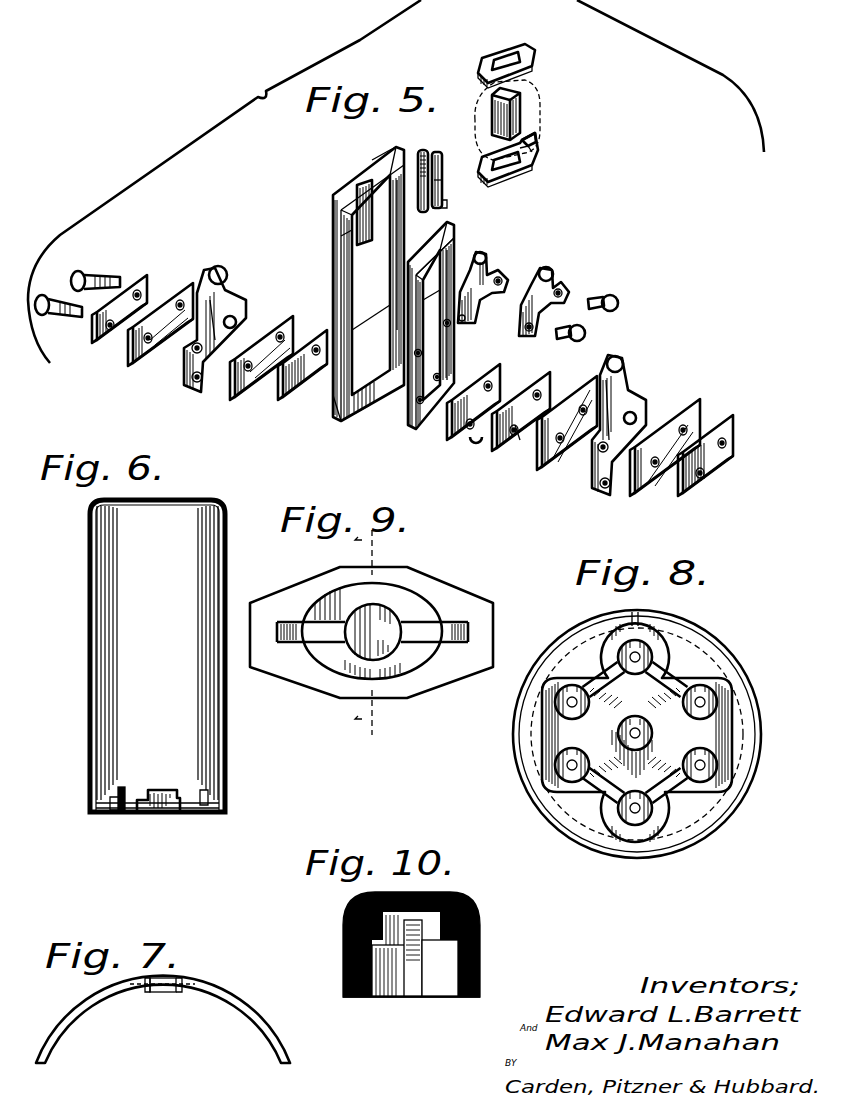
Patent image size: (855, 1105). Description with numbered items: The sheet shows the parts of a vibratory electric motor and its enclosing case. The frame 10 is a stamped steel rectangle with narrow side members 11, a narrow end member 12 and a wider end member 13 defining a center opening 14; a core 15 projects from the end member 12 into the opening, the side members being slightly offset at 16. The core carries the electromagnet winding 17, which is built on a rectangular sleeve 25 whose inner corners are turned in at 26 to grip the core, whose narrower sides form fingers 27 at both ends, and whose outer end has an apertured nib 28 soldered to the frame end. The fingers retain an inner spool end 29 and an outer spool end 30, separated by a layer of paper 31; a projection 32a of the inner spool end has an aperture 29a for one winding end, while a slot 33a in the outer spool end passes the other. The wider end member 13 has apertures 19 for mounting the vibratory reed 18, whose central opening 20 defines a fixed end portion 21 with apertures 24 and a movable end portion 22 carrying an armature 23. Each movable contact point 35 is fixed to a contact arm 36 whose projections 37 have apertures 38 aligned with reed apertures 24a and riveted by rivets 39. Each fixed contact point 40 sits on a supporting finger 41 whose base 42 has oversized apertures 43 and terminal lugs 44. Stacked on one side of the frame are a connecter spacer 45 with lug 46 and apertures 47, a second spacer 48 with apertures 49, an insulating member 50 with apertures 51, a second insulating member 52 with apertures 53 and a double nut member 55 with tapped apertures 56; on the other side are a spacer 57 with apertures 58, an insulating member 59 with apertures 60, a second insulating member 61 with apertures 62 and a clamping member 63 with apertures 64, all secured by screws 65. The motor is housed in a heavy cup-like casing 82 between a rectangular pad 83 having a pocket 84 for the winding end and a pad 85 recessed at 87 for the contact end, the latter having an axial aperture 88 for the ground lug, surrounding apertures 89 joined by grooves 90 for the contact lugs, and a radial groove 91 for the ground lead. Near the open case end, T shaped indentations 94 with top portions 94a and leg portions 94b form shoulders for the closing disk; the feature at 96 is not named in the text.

In FIG. 5, the frame 10 is at (358, 170).
In FIG. 9, the frame 10 is at (355, 540).
In FIG. 5, the side members 11 is at (335, 275).
In FIG. 5, the end member 12 is at (372, 160).
In FIG. 5, the end member 13 is at (362, 405).
In FIG. 5, the center opening 14 is at (362, 302).
In FIG. 5, the core 15 is at (370, 235).
In FIG. 5, the offset 16 is at (345, 236).
In FIG. 5, the electromagnet winding 17 is at (540, 95).
In FIG. 5, the vibratory reed 18 is at (455, 345).
In FIG. 5, the apertures 19 is at (340, 418).
In FIG. 5, the central opening 20 is at (440, 305).
In FIG. 5, the fixed end portion 21 is at (416, 422).
In FIG. 5, the end portion 22 is at (440, 222).
In FIG. 5, the armature 23 is at (445, 240).
In FIG. 5, the apertures 24 is at (437, 384).
In FIG. 5, the apertures 24a is at (452, 322).
In FIG. 5, the sleeve 25 is at (438, 185).
In FIG. 5, the turned-in corners 26 is at (440, 208).
In FIG. 5, the fingers 27 is at (440, 152).
In FIG. 5, the nib 28 is at (422, 150).
In FIG. 5, the inner spool end 29 is at (538, 158).
In FIG. 5, the aperture 29a is at (530, 135).
In FIG. 5, the outer spool end 30 is at (530, 50).
In FIG. 5, the layer of paper 31 is at (520, 90).
In FIG. 5, the projection 32a is at (535, 145).
In FIG. 5, the slot 33a is at (498, 60).
In FIG. 5, the movable contact point 35 is at (482, 252).
In FIG. 5, the movable contact arm 36 is at (482, 290).
In FIG. 5, the projections 37 is at (502, 278).
In FIG. 5, the apertures 38 is at (503, 282).
In FIG. 5, the rivets 39 is at (605, 313).
In FIG. 5, the fixed contact point 40 is at (225, 272).
In FIG. 5, the supporting finger 41 is at (225, 290).
In FIG. 5, the base 42 is at (238, 318).
In FIG. 5, the apertures 43 is at (238, 330).
In FIG. 5, the terminal lugs 44 is at (198, 385).
In FIG. 5, the connecter spacer 45 is at (458, 430).
In FIG. 5, the lug 46 is at (475, 440).
In FIG. 5, the securing apertures 47 is at (490, 383).
In FIG. 5, the second spacer 48 is at (540, 388).
In FIG. 5, the securing apertures 49 is at (522, 432).
In FIG. 5, the insulating member 50 is at (548, 450).
In FIG. 5, the apertures 51 is at (580, 448).
In FIG. 5, the insulating member 52 is at (652, 478).
In FIG. 5, the apertures 53 is at (668, 468).
In FIG. 5, the double nut member 55 is at (700, 482).
In FIG. 5, the tapped apertures 56 is at (722, 452).
In FIG. 5, the spacer 57 is at (292, 400).
In FIG. 5, the apertures 58 is at (312, 360).
In FIG. 5, the insulating member 59 is at (242, 398).
In FIG. 5, the apertures 60 is at (252, 370).
In FIG. 5, the insulating member 61 is at (185, 285).
In FIG. 5, the apertures 62 is at (150, 345).
In FIG. 5, the clamping member 63 is at (138, 280).
In FIG. 5, the apertures 64 is at (150, 290).
In FIG. 5, the screws 65 is at (70, 296).
In FIG. 6, the enclosing casing 82 is at (90, 680).
In FIG. 8, the enclosing casing 82 is at (720, 700).
In FIG. 7, the enclosing casing 82 is at (243, 1005).
In FIG. 9, the pad 83 is at (302, 688).
In FIG. 10, the pad 83 is at (470, 906).
In FIG. 9, the pocket 84 is at (428, 662).
In FIG. 10, the pocket 84 is at (480, 945).
In FIG. 8, the pad 85 is at (745, 742).
In FIG. 8, the recess 87 is at (733, 719).
In FIG. 8, the aperture 88 is at (625, 718).
In FIG. 8, the apertures 89 is at (650, 650).
In FIG. 8, the grooves 90 is at (580, 675).
In FIG. 8, the radial groove 91 is at (622, 622).
In FIG. 6, the T shaped indentations 94 is at (145, 790).
In FIG. 7, the T shaped indentations 94 is at (145, 995).
In FIG. 6, the top portion 94a is at (165, 792).
In FIG. 7, the top portion 94a is at (180, 995).
In FIG. 6, the leg portion 94b is at (172, 815).
In FIG. 7, the leg portion 94b is at (162, 995).
In FIG. 6, the slot 96 is at (128, 815).